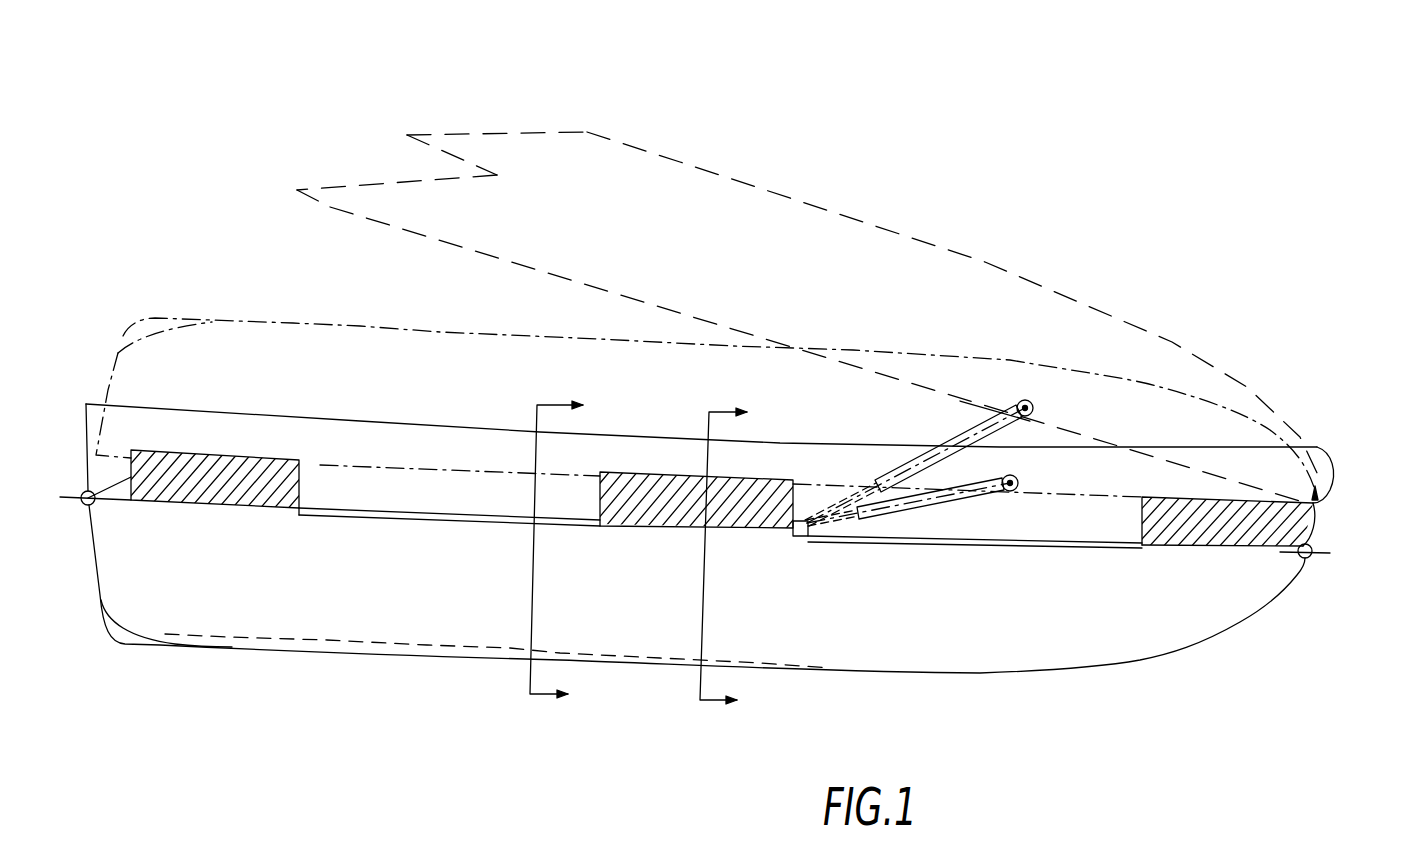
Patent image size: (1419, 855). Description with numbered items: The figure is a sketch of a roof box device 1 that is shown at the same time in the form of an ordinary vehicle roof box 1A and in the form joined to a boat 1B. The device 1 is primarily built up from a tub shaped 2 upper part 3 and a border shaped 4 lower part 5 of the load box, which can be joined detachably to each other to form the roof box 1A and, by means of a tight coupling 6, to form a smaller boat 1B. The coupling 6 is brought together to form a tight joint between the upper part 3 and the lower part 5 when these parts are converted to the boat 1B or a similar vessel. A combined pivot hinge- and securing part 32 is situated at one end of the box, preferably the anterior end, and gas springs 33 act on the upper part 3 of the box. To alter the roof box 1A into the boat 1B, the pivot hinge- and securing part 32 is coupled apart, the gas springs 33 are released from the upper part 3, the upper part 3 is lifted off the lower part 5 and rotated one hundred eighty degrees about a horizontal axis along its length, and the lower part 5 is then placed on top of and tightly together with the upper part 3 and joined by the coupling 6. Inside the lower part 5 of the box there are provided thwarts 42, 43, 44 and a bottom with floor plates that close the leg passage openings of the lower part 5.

The device 1 is at (1225, 172).
The roof box 1A is at (319, 494).
The boat 1B is at (511, 500).
The tub shaped 2 is at (1222, 638).
The upper part 3 is at (370, 548).
The border shaped 4 is at (342, 413).
The lower part 5 is at (185, 434).
The coupling 6 is at (84, 504).
The combined pivot hinge- and securing part 32 is at (1315, 503).
The gas springs 33 is at (985, 425).
The thwart 42 is at (185, 480).
The thwart 43 is at (650, 513).
The thwart 44 is at (1207, 533).